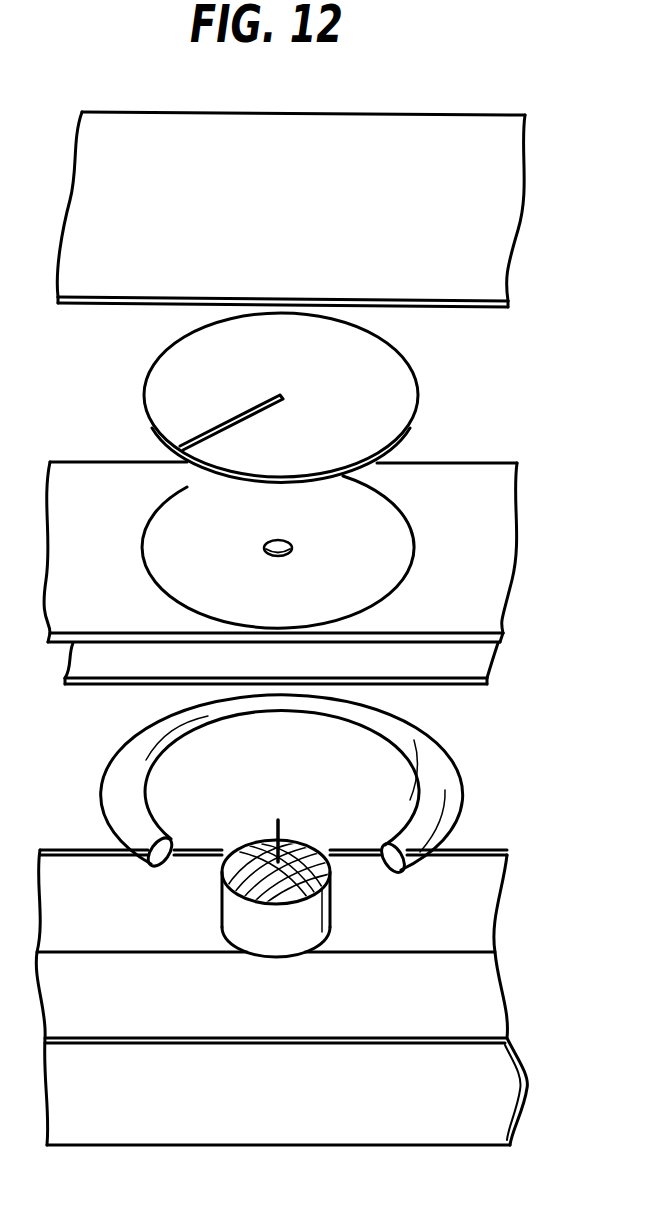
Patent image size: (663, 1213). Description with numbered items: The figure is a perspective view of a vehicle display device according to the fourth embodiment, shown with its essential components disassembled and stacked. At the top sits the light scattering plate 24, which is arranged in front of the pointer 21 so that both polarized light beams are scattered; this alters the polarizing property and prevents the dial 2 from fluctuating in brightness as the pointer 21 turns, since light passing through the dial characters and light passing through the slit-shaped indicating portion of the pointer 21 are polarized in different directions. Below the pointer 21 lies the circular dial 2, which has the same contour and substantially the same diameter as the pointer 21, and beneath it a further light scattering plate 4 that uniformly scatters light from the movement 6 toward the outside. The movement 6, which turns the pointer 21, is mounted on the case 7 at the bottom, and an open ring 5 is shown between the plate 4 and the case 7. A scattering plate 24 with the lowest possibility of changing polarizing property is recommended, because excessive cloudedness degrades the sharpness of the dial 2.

The light scattering plate 24 is at (488, 213).
The pointer 21 is at (398, 397).
The dial 2 is at (400, 552).
The light scattering plate 4 is at (468, 662).
The open ring 5 is at (447, 773).
The movement 6 is at (332, 917).
The case 7 is at (477, 1095).